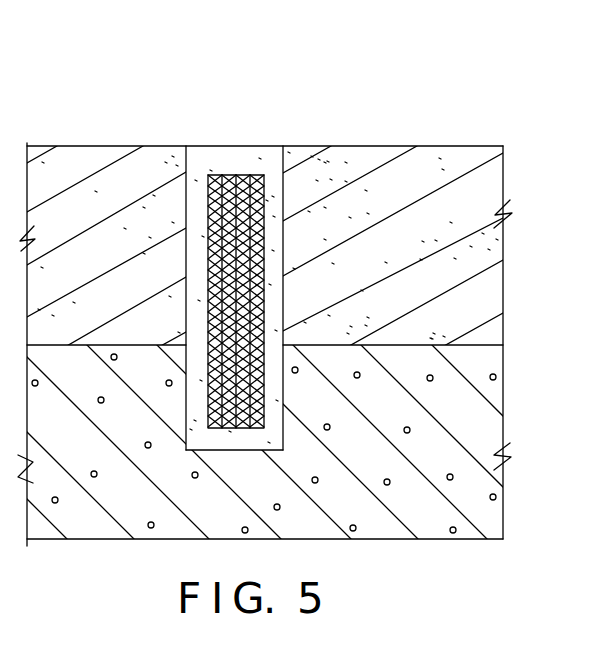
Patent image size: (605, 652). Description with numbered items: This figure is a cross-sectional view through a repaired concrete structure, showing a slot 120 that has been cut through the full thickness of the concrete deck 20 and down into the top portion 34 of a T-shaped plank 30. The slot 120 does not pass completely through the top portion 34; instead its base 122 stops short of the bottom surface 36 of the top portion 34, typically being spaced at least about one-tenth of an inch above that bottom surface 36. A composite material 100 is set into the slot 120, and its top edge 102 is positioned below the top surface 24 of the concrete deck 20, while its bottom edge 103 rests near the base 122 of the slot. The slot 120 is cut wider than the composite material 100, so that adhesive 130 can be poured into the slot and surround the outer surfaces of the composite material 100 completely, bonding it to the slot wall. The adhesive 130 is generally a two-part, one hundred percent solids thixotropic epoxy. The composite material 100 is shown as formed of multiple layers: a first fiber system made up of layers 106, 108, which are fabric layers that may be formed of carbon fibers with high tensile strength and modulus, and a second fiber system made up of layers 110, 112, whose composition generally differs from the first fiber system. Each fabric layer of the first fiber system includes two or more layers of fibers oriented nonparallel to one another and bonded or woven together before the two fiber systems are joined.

The concrete deck 20 is at (479, 147).
The top surface 24 is at (109, 146).
The T-shaped plank 30 is at (439, 542).
The top portion 34 is at (467, 437).
The bottom surface 36 is at (110, 540).
The composite material 100 is at (242, 172).
The top edge 102 is at (230, 175).
The bottom edge 103 is at (233, 428).
The fiber layer 106 is at (217, 268).
The fiber layer 108 is at (242, 297).
The fiber layer 110 is at (217, 225).
The fiber layer 112 is at (263, 342).
The slot 120 is at (188, 164).
The base 122 is at (257, 450).
The adhesive 130 is at (283, 250).